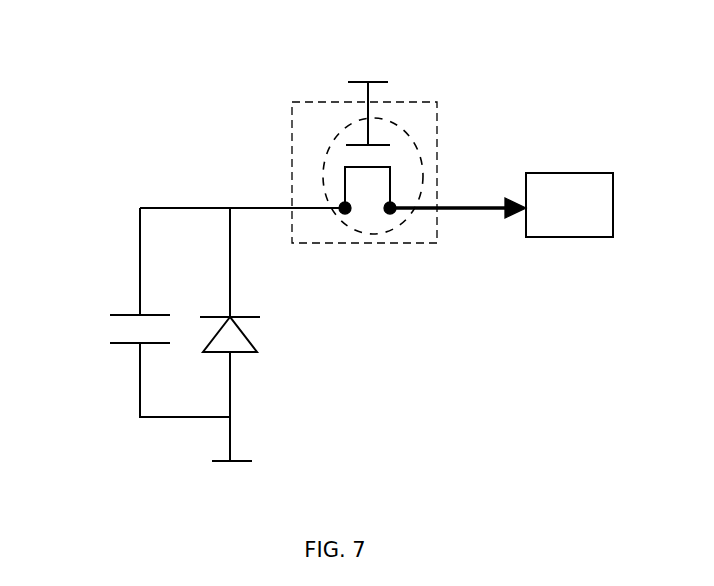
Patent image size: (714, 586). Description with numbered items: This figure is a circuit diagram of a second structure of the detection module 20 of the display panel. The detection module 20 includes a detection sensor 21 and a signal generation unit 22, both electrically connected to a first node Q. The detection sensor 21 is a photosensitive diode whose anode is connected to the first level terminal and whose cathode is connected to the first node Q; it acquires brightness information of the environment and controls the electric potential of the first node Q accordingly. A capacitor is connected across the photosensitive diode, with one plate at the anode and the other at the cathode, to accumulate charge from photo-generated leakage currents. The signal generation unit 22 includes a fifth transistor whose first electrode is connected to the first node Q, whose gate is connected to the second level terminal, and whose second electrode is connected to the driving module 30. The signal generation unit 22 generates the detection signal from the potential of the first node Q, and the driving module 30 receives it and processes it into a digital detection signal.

The detection module 20 is at (232, 153).
The detection sensor 21 is at (261, 340).
The signal generation unit 22 is at (437, 142).
The driving module 30 is at (557, 173).